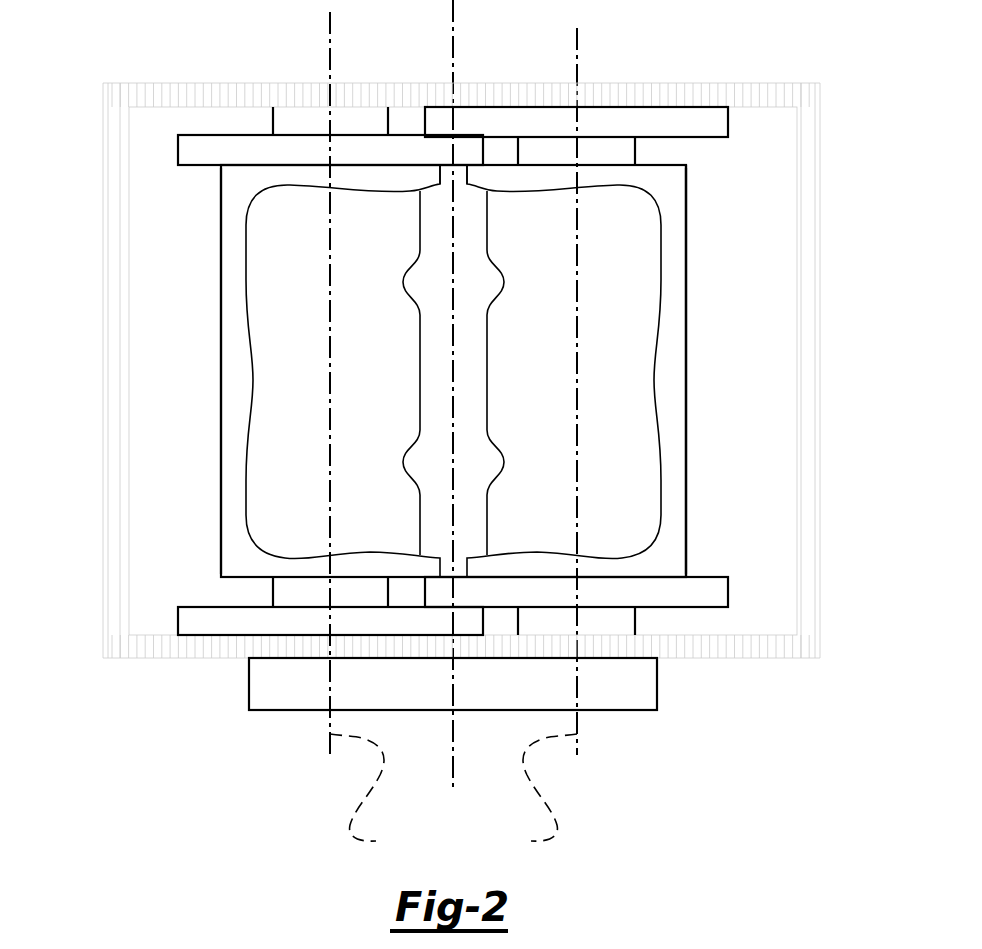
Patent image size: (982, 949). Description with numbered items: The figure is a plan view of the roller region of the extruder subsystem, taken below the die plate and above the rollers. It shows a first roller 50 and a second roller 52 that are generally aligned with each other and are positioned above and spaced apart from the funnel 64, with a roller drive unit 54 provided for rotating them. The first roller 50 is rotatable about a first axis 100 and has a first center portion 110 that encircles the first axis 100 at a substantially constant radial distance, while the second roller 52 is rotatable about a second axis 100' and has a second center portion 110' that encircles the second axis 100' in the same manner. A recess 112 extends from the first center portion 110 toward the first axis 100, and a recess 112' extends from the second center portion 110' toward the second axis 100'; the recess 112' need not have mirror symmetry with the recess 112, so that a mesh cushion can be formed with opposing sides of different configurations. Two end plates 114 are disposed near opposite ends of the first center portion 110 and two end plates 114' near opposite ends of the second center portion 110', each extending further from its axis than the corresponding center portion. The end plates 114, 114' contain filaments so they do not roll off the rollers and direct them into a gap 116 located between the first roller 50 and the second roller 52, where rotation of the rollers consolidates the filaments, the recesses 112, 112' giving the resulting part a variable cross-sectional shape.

The first roller 50 is at (222, 403).
The second roller 52 is at (686, 403).
The roller drive unit 54 is at (297, 711).
The funnel 64 is at (164, 508).
The first axis 100 is at (370, 796).
The second axis 100' is at (537, 796).
The first center portion 110 is at (366, 371).
The second center portion 110' is at (777, 371).
The recess 112 is at (343, 371).
The recess 112' is at (564, 371).
The end plate 114 is at (267, 374).
The end plate 114' is at (640, 374).
The gap 116 is at (457, 178).